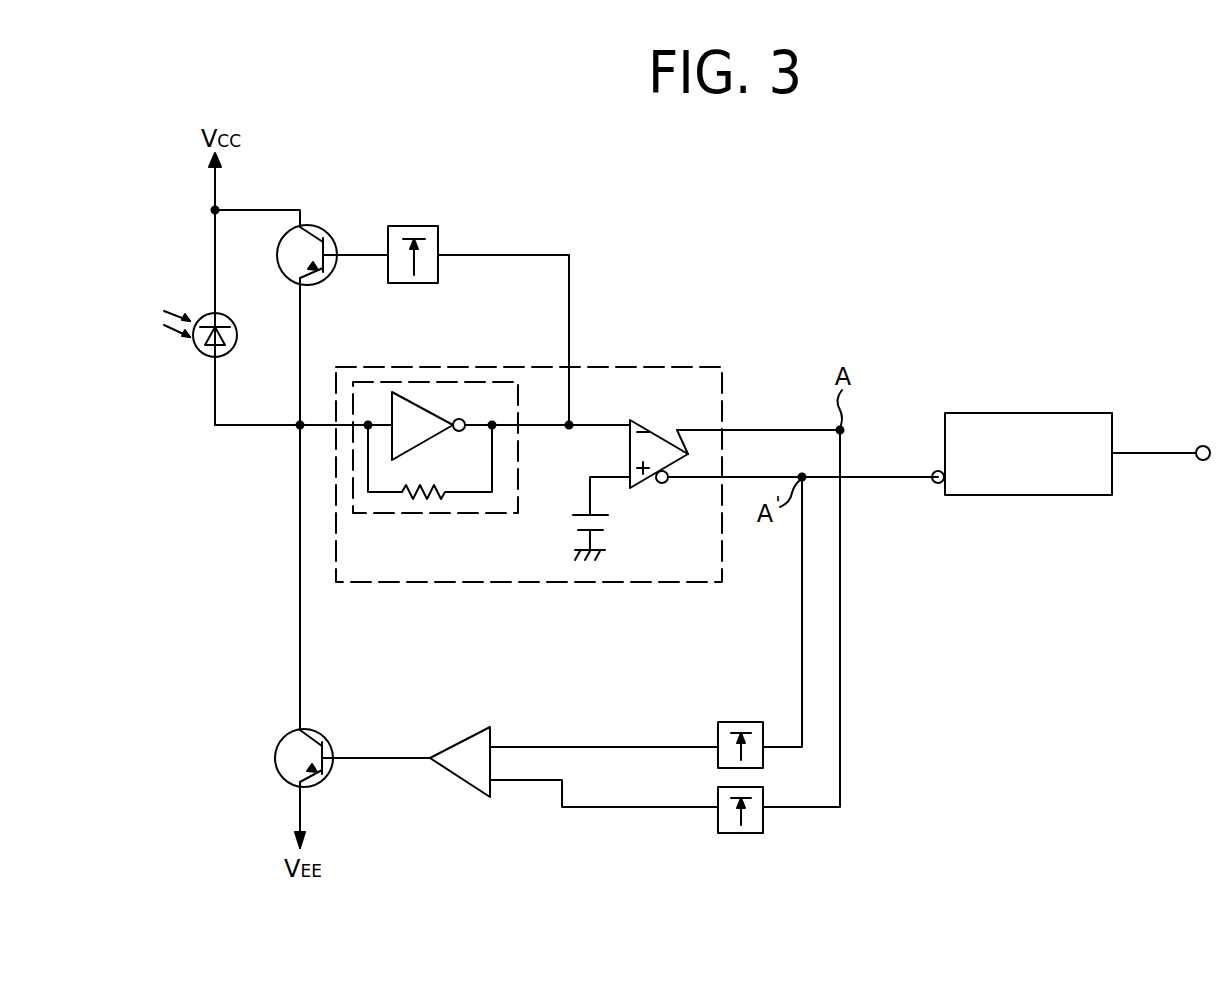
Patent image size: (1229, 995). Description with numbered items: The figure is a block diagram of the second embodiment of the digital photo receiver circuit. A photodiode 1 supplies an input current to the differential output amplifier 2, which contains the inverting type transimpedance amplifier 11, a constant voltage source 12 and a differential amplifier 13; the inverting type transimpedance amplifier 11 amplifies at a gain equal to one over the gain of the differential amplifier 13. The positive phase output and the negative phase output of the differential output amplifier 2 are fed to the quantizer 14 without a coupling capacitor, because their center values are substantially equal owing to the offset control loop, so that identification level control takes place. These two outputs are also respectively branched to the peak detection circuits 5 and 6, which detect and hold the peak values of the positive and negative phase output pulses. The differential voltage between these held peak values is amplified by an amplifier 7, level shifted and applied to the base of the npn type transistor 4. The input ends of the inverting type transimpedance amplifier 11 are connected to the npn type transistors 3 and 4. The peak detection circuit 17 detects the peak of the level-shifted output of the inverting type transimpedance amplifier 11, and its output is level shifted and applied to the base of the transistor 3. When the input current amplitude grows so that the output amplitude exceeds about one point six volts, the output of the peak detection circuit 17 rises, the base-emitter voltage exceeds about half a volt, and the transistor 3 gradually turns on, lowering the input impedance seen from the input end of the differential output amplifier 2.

The photodiode 1 is at (228, 320).
The differential output amplifier 2 is at (676, 367).
The npn type transistor 3 is at (325, 232).
The npn type transistor 4 is at (318, 730).
The peak detection circuit 5 is at (744, 833).
The peak detection circuit 6 is at (739, 722).
The differential amplifier 7 is at (455, 740).
The inverting type transimpedance amplifier 11 is at (478, 513).
The constant voltage source 12 is at (610, 526).
The differential amplifier 13 is at (657, 425).
The quantizer 14 is at (1010, 413).
The peak detection circuit 17 is at (415, 226).